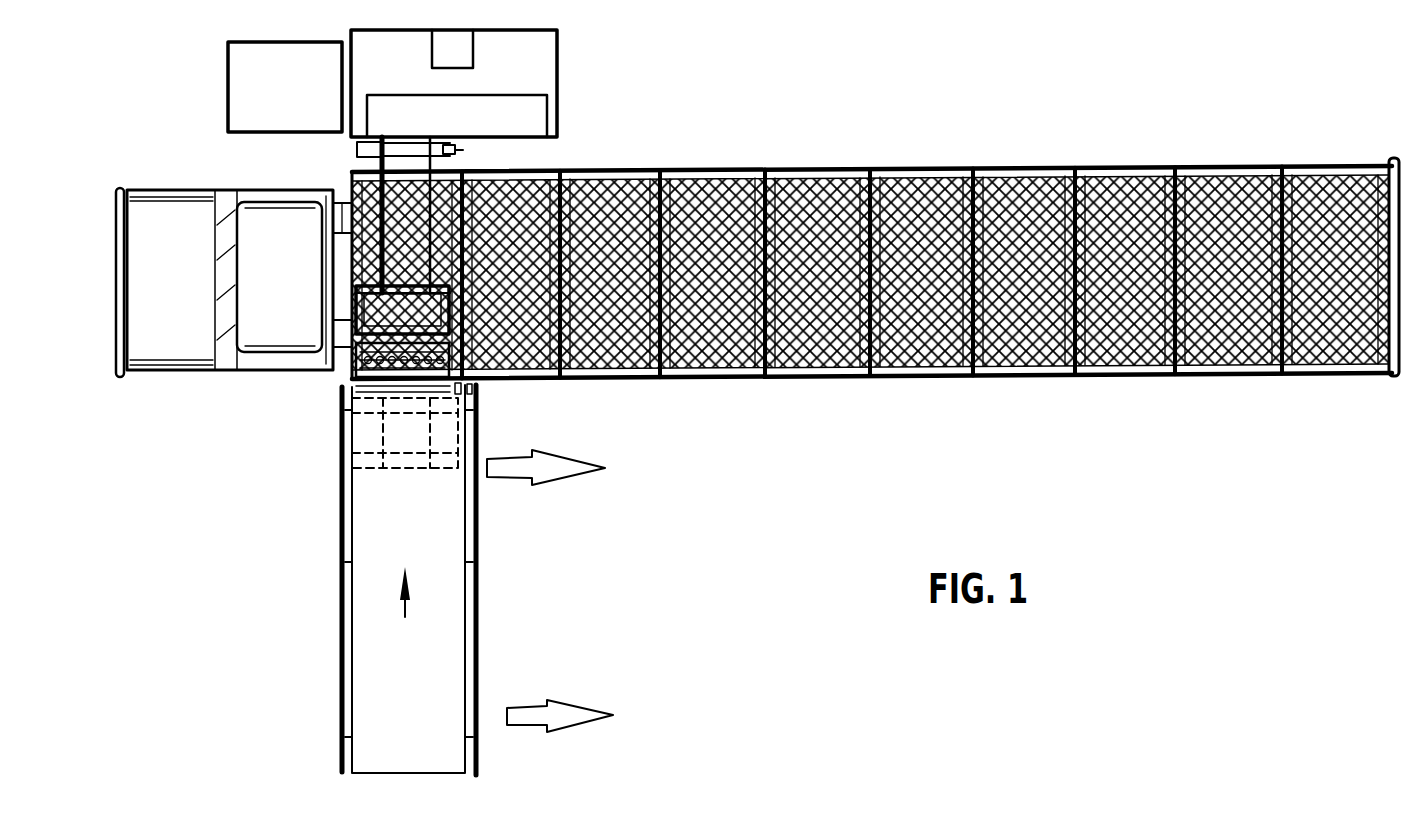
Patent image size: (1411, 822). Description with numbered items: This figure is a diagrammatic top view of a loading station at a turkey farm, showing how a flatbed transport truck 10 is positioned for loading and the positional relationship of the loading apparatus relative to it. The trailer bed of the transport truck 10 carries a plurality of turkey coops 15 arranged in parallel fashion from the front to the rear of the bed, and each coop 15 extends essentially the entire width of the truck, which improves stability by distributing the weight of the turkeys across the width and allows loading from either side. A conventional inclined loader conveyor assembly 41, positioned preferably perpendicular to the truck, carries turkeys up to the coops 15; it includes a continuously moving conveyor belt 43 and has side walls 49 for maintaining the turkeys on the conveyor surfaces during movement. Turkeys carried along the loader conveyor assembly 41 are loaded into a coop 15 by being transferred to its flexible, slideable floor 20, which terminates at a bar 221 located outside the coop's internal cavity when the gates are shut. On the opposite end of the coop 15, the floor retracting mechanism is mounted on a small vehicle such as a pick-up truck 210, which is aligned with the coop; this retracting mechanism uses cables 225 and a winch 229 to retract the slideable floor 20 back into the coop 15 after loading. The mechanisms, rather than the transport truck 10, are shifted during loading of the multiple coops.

The transport truck 10 is at (208, 424).
The coop 15 is at (818, 165).
The slideable floor 20 is at (350, 372).
The loader conveyor assembly 41 is at (333, 711).
The conveyor belt 43 is at (423, 702).
The side walls 49 is at (341, 614).
The pick-up truck 210 is at (236, 86).
The bar 221 is at (352, 318).
The cables 225 is at (380, 166).
The winch 229 is at (463, 149).